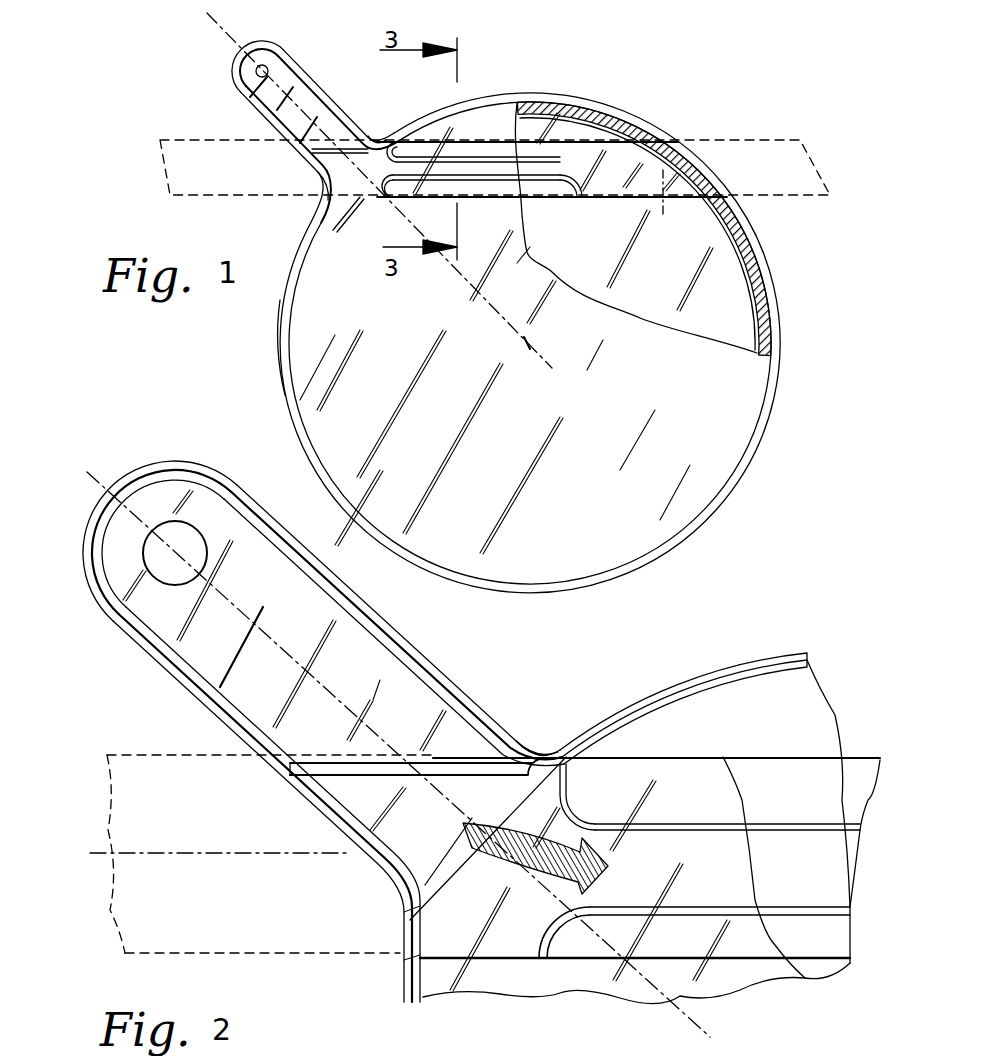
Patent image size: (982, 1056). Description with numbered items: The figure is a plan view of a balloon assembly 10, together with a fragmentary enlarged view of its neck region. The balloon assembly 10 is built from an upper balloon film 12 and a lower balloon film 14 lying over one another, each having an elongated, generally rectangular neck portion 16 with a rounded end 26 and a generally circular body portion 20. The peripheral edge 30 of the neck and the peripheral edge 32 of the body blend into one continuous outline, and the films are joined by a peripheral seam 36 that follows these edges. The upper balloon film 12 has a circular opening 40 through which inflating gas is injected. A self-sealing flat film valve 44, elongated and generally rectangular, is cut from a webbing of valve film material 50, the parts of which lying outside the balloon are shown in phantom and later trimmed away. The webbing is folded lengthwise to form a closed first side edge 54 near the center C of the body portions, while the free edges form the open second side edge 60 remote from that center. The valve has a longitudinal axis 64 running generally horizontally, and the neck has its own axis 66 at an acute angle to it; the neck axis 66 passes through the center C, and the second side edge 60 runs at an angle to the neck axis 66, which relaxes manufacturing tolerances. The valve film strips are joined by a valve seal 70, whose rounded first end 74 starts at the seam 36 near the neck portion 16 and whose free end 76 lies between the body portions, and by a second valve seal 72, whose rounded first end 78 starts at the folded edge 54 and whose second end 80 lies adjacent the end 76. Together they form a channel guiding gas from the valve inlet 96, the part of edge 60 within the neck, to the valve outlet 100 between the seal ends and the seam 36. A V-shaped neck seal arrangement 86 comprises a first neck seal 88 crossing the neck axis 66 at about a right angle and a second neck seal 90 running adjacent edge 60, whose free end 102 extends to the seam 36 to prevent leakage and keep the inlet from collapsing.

In FIG. 1, the balloon assembly 10 is at (690, 118).
In FIG. 1, the upper balloon film 12 is at (565, 285).
In FIG. 2, the upper balloon film 12 is at (410, 665).
In FIG. 1, the lower balloon film 14 is at (736, 285).
In FIG. 2, the lower balloon film 14 is at (736, 988).
In FIG. 1, the neck portion 16 is at (289, 126).
In FIG. 2, the neck portion 16 is at (323, 725).
In FIG. 1, the body portion 20 is at (284, 362).
In FIG. 1, the rounded end 26 is at (236, 74).
In FIG. 1, the peripheral edge of neck portion 30 is at (319, 92).
In FIG. 2, the peripheral edge of neck portion 30 is at (231, 481).
In FIG. 1, the peripheral edge of body portion 32 is at (776, 351).
In FIG. 2, the peripheral edge of body portion 32 is at (762, 660).
In FIG. 1, the peripheral seam 36 is at (766, 312).
In FIG. 2, the peripheral seam 36 is at (266, 529).
In FIG. 1, the circular opening 40 is at (256, 78).
In FIG. 2, the circular opening 40 is at (192, 530).
In FIG. 1, the valve 44 is at (663, 210).
In FIG. 2, the valve 44 is at (690, 750).
In FIG. 1, the webbing of valve film material 50 is at (790, 140).
In FIG. 2, the webbing of valve film material 50 is at (177, 750).
In FIG. 1, the first side edge 54 is at (547, 200).
In FIG. 2, the first side edge 54 is at (500, 960).
In FIG. 1, the second side edge 60 is at (588, 112).
In FIG. 2, the second side edge 60 is at (482, 758).
In FIG. 2, the longitudinal center line or axis 64 is at (255, 856).
In FIG. 1, the longitudinal center line axis 66 is at (300, 66).
In FIG. 2, the longitudinal center line axis 66 is at (236, 601).
In FIG. 1, the valve seal 70 is at (532, 142).
In FIG. 2, the valve seal 70 is at (770, 825).
In FIG. 1, the second valve seal 72 is at (520, 198).
In FIG. 2, the second valve seal 72 is at (775, 905).
In FIG. 1, the first end 74 is at (432, 133).
In FIG. 2, the first end 74 is at (573, 785).
In FIG. 1, the free end 76 is at (562, 158).
In FIG. 2, the first end 78 is at (548, 938).
In FIG. 1, the second end 80 is at (578, 198).
In FIG. 1, the neck seal arrangement 86 is at (338, 190).
In FIG. 2, the neck seal arrangement 86 is at (494, 750).
In FIG. 1, the first neck seal 88 is at (360, 217).
In FIG. 2, the first neck seal 88 is at (500, 824).
In FIG. 1, the second neck seal 90 is at (325, 152).
In FIG. 2, the second neck seal 90 is at (383, 773).
In FIG. 1, the valve inlet 96 is at (380, 128).
In FIG. 2, the valve inlet 96 is at (456, 705).
In FIG. 1, the valve outlet 100 is at (613, 142).
In FIG. 2, the free end 102 is at (292, 790).
In FIG. 1, the center C is at (527, 343).